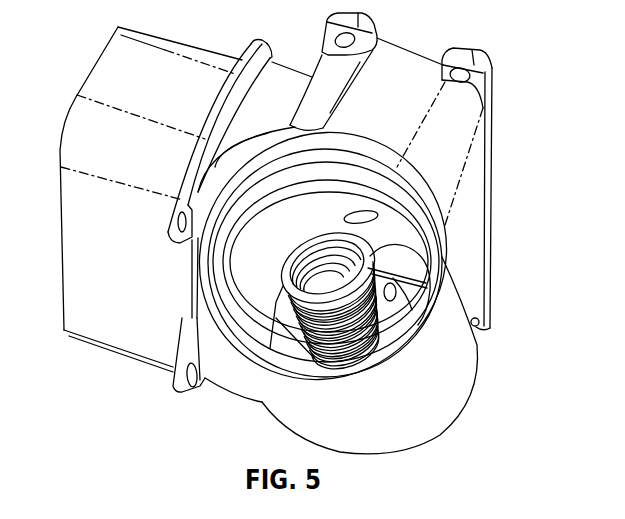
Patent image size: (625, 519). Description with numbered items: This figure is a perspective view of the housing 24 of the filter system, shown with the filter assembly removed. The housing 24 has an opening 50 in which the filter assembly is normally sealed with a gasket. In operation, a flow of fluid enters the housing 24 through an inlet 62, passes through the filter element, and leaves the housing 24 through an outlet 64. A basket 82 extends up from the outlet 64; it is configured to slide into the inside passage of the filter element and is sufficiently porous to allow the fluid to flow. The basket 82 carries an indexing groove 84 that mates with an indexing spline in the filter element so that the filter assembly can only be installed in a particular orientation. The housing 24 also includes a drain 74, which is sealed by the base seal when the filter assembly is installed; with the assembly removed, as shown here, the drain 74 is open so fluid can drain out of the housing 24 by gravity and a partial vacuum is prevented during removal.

The housing 24 is at (481, 379).
The opening 50 is at (385, 226).
The inlet 62 is at (356, 211).
The outlet 64 is at (290, 258).
The drain 74 is at (397, 265).
The basket 82 is at (392, 303).
The indexing groove 84 is at (333, 231).